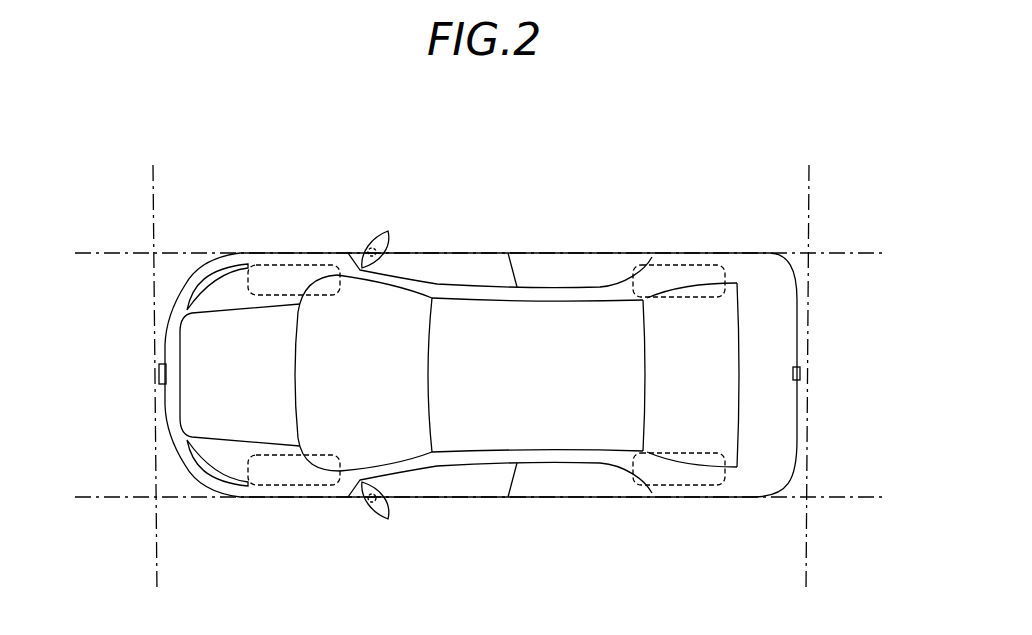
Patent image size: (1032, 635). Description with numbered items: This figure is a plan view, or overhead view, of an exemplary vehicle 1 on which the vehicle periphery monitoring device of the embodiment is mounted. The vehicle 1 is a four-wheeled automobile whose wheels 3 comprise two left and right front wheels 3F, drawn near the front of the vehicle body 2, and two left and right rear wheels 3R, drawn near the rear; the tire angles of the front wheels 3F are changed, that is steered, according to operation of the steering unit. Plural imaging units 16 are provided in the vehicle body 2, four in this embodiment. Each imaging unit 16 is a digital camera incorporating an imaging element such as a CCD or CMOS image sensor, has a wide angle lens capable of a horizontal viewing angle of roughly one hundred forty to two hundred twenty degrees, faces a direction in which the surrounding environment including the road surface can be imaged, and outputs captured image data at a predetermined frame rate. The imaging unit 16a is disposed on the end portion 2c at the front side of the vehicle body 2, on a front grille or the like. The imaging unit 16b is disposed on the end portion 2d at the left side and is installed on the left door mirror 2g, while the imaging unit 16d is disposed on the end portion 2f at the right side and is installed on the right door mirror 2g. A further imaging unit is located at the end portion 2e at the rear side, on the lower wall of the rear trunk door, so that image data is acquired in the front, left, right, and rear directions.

The vehicle 1 is at (592, 171).
The vehicle body 2 is at (748, 251).
The end portion at the front side of the vehicle body 2c is at (163, 413).
The end portion at the left side of the vehicle body 2d is at (577, 500).
The end portion at the rear side of the vehicle body 2e is at (800, 395).
The end portion at the right side of the vehicle body 2f is at (586, 251).
The door mirror 2g is at (392, 236).
The wheel 3 is at (456, 375).
The front wheel 3F is at (291, 264).
The rear wheel 3R is at (676, 265).
The imaging unit 16 is at (478, 391).
The imaging unit 16a is at (158, 377).
The imaging unit 16b is at (372, 503).
The imaging unit 16d is at (375, 246).